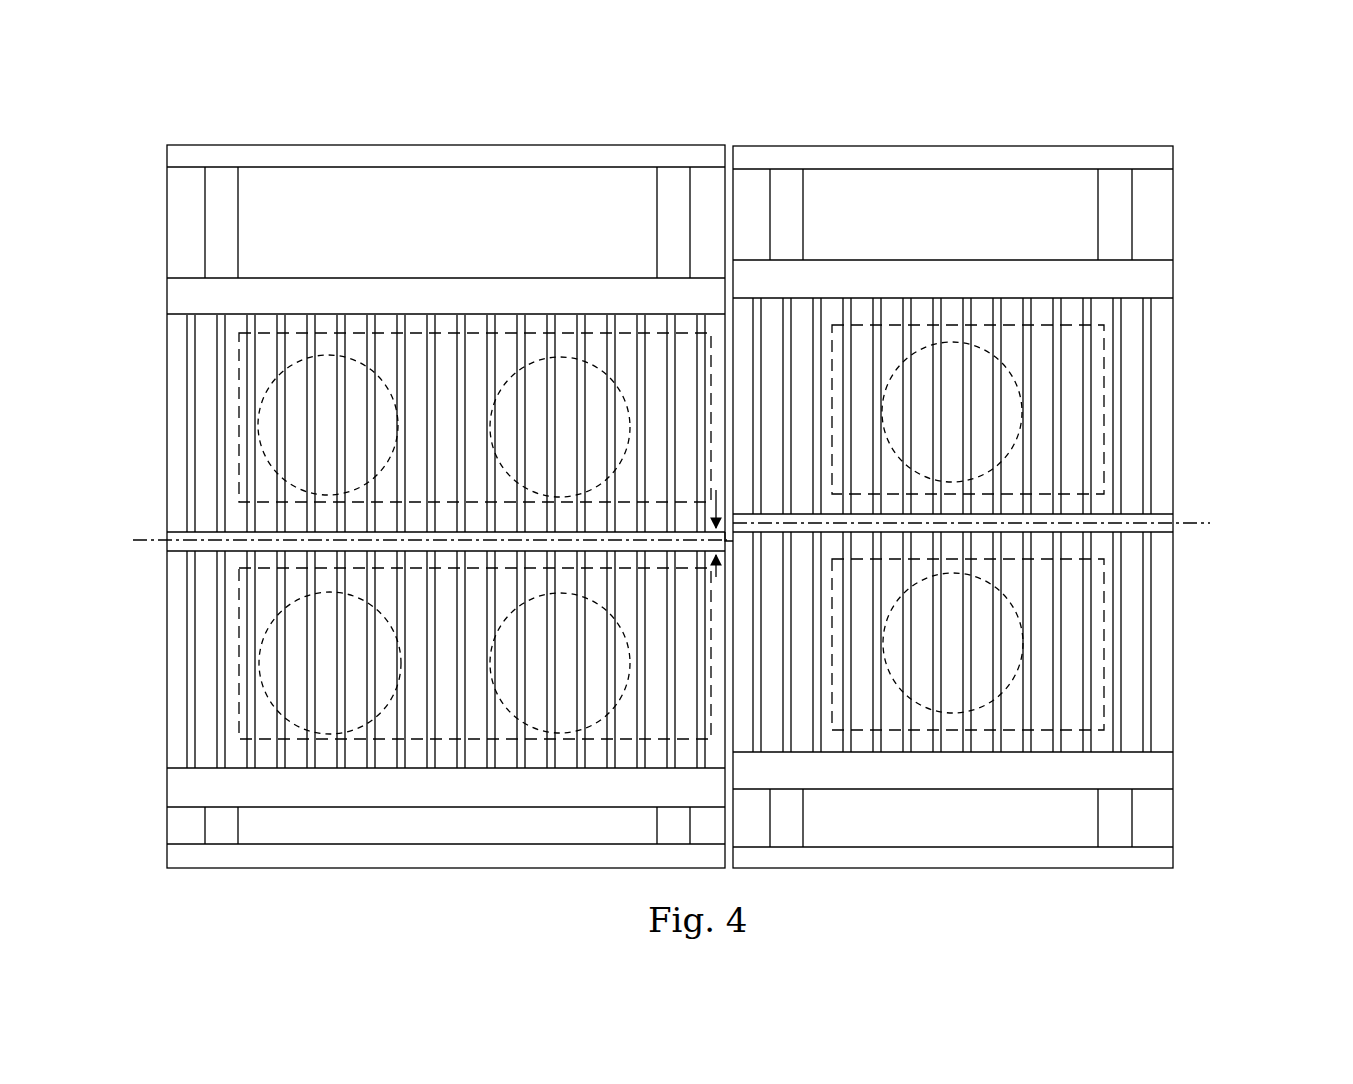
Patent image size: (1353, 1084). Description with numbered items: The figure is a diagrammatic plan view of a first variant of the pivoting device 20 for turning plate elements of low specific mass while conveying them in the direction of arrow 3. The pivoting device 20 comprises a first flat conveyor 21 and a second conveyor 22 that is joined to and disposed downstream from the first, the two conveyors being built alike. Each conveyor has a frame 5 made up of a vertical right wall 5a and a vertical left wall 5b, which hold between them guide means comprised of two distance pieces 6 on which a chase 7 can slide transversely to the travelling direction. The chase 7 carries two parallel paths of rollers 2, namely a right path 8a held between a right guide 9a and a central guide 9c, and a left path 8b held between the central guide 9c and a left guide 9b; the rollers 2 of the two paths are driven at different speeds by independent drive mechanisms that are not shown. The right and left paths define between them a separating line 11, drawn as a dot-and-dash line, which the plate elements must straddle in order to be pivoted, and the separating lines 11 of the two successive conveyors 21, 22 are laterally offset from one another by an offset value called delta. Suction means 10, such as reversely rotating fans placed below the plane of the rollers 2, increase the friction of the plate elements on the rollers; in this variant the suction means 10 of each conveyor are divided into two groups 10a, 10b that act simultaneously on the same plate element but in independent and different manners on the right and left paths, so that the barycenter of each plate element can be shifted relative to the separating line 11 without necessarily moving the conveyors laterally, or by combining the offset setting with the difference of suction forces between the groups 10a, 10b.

The pivoting device 20 is at (1252, 154).
The first flat conveyor 21 is at (958, 117).
The second conveyor 22 is at (485, 117).
The arrow 3 is at (664, 103).
The frame 5 is at (309, 880).
The right wall 5a is at (177, 158).
The left wall 5b is at (180, 858).
The distance pieces 6 is at (222, 832).
The chase 7 is at (414, 264).
The right guide 9a is at (180, 300).
The left guide 9b is at (177, 785).
The central guide 9c is at (180, 535).
The separating line 11 is at (146, 542).
The rollers 2 is at (175, 355).
The right path 8a is at (152, 437).
The left path 8b is at (146, 666).
The suction means 10 is at (385, 372).
The first group of suction means 10a is at (239, 387).
The second group of suction means 10b is at (239, 623).